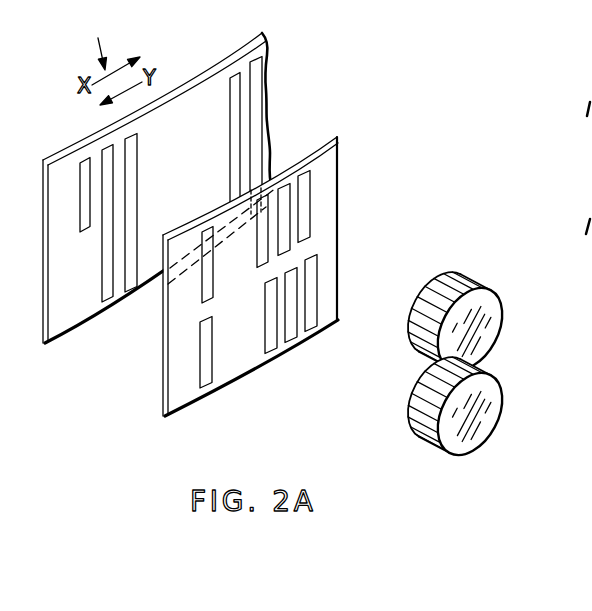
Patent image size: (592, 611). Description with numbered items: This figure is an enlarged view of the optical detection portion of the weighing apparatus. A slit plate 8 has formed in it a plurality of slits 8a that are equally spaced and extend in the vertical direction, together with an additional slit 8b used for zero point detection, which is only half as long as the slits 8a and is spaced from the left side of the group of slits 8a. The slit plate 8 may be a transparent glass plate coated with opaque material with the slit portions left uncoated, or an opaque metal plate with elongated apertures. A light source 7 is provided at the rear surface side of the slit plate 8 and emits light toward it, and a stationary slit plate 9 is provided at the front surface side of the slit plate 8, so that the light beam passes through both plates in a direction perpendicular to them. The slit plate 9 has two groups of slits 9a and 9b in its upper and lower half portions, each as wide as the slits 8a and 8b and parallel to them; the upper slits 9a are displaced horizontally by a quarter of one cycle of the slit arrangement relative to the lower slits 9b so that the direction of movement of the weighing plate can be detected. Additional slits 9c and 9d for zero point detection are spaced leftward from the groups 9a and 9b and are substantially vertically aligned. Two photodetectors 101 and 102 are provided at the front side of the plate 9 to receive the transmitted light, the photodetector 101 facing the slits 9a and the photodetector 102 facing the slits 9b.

The light source 7 is at (103, 43).
The slit plate 8 is at (207, 68).
The slits 8a is at (259, 76).
The additional slit 8b is at (80, 230).
The stationary slit plate 9 is at (172, 387).
The upper group of slits 9a is at (313, 202).
The lower group of slits 9b is at (318, 285).
The additional slit 9c is at (209, 231).
The additional slit 9d is at (208, 385).
The photodetector 101 is at (437, 292).
The photodetector 102 is at (492, 408).